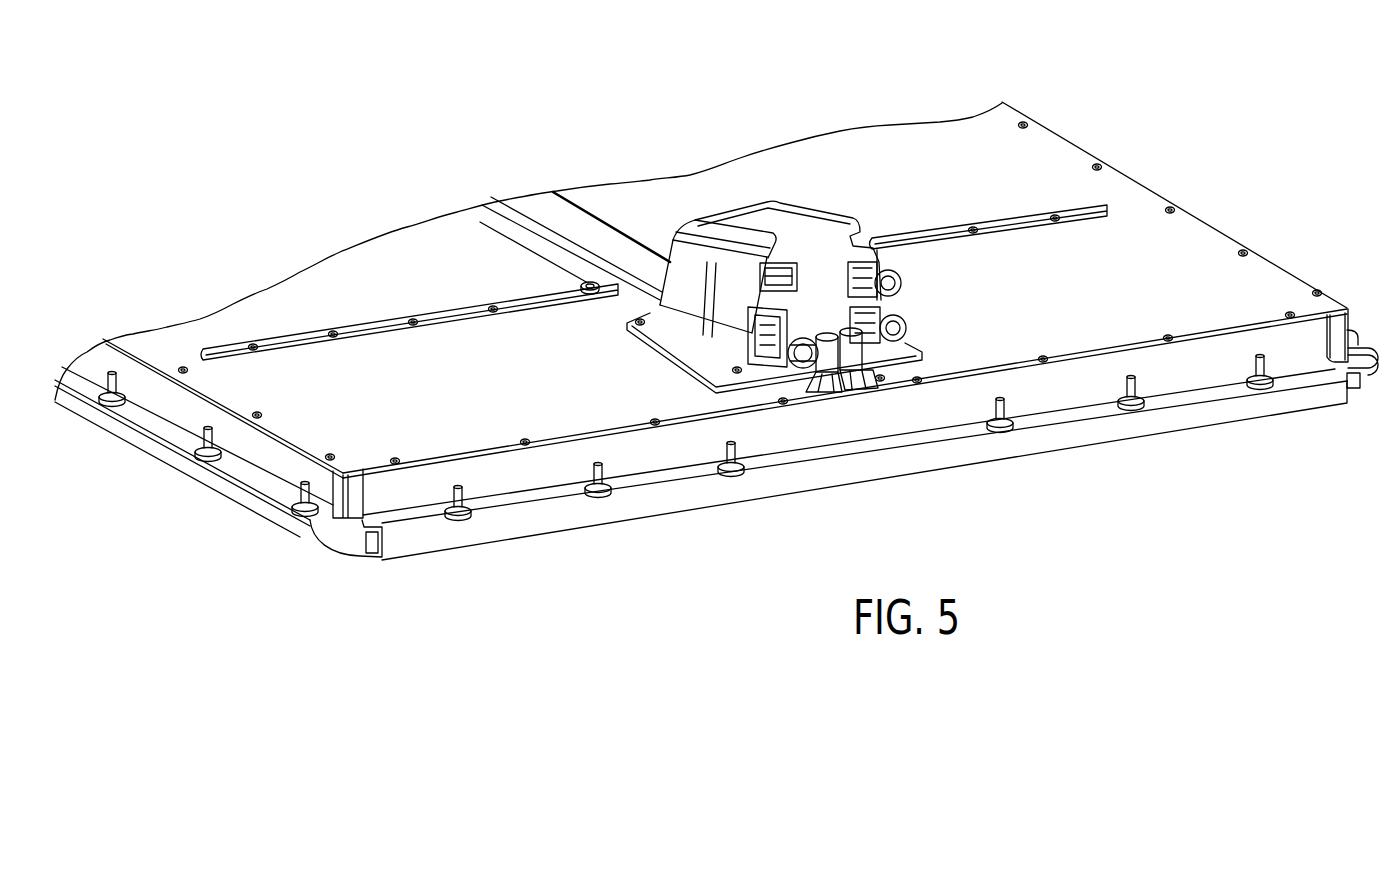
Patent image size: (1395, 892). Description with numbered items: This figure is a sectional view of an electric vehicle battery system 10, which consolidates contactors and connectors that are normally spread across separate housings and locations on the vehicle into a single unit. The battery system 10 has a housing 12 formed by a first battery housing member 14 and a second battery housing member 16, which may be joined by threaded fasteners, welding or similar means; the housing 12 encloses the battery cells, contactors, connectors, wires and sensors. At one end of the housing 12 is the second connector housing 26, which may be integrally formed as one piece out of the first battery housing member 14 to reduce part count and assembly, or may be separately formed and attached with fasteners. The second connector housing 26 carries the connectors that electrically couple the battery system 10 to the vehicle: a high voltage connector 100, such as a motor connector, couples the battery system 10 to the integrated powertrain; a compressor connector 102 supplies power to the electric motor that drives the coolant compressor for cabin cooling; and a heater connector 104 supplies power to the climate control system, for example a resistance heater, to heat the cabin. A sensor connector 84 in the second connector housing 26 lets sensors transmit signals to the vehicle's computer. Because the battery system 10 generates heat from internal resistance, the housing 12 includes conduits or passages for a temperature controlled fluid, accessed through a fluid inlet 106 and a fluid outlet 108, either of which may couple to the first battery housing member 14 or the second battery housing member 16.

The electric vehicle battery system 10 is at (1053, 71).
The housing 12 is at (1232, 224).
The first battery housing member 14 is at (1034, 165).
The second battery housing member 16 is at (703, 493).
The second connector housing 26 is at (1005, 518).
The sensor connector 84 is at (798, 268).
The high voltage connector 100 is at (752, 360).
The compressor connector 102 is at (892, 312).
The heater connector 104 is at (888, 265).
The fluid inlet 106 is at (830, 383).
The fluid outlet 108 is at (855, 385).